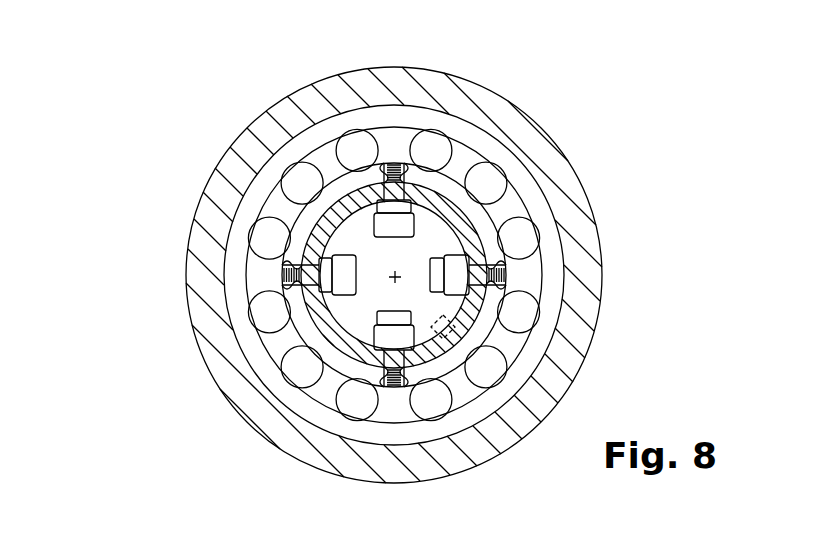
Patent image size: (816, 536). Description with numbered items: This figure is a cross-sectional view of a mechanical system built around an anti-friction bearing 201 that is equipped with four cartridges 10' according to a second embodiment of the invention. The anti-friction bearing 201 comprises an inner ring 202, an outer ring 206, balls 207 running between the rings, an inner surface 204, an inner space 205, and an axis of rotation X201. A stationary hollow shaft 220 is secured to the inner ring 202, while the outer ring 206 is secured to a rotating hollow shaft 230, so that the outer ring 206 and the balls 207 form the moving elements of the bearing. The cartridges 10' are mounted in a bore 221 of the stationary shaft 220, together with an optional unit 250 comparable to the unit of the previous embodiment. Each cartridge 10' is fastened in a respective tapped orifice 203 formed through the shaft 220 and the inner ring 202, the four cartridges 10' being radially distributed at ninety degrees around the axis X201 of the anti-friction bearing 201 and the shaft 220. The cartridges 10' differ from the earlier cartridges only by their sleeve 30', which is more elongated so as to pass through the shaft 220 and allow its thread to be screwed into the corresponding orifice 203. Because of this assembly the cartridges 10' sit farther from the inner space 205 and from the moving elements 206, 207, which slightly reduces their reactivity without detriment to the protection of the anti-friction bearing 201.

The anti-friction bearing 201 is at (133, 167).
The rotating hollow shaft 230 is at (522, 143).
The outer ring 206 is at (550, 273).
The stationary hollow shaft 220 is at (477, 155).
The inner space 205 is at (515, 196).
The inner surface 204 is at (495, 204).
The inner ring 202 is at (520, 316).
The bore 221 is at (448, 217).
The cartridge 10' is at (338, 238).
The sleeve 30' is at (316, 275).
The balls 207 is at (500, 300).
The unit 250 is at (498, 452).
The tapped orifices 203 is at (357, 283).
The axis of rotation X201 is at (397, 263).